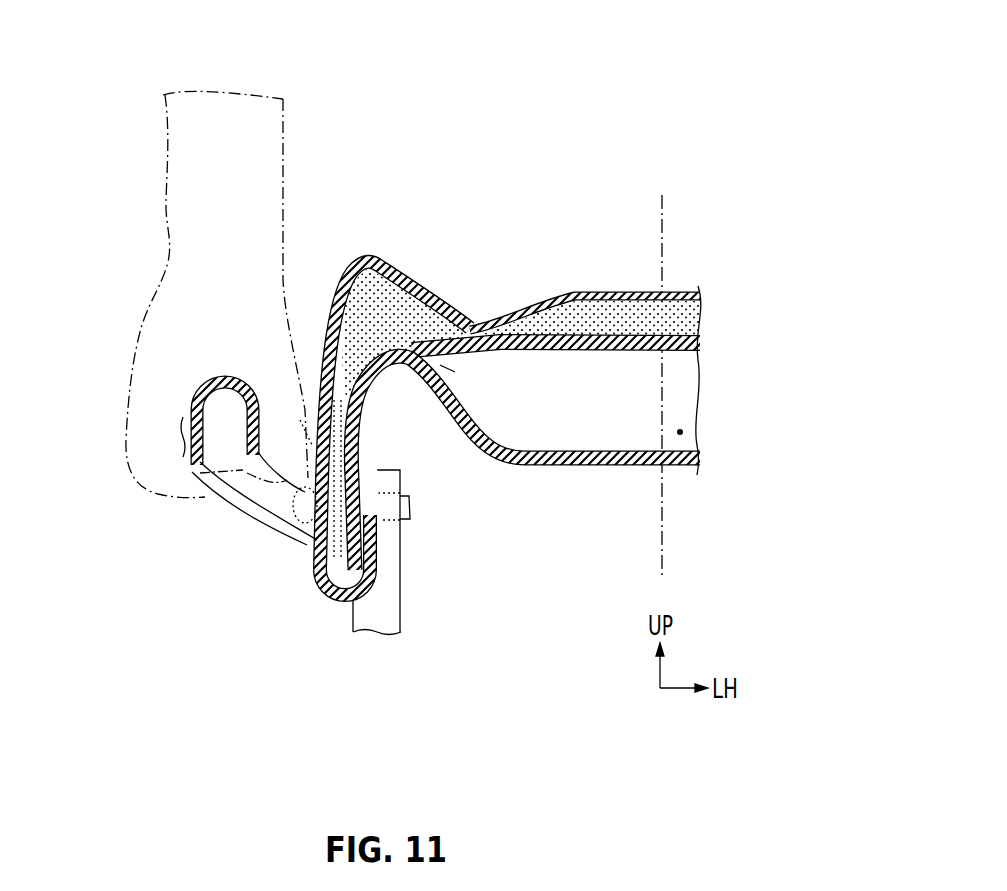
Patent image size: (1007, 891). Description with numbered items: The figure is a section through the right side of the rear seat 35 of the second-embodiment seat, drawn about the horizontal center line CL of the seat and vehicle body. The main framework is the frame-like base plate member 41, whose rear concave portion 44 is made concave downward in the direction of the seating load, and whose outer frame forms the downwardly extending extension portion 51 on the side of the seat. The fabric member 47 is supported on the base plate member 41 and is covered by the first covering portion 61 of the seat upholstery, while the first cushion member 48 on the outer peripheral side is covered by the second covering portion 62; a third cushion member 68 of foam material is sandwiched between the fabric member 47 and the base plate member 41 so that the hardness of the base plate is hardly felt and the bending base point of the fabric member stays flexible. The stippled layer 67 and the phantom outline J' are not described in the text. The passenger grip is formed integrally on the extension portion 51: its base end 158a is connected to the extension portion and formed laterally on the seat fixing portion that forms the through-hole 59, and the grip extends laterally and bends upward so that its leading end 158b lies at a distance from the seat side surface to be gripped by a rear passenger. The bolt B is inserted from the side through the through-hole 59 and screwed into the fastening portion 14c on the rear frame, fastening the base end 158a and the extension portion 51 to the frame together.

The rear seat 35 is at (509, 148).
The second covering portion 62 is at (375, 256).
The first cushion member 48 is at (400, 305).
The first covering portion 61 is at (642, 291).
The sponge layer 67 is at (700, 312).
The fabric member 47 is at (700, 350).
The third cushion member 68 is at (450, 368).
The rear concave portion 44 is at (680, 432).
The base plate member 41 is at (553, 466).
The extension portion 51 is at (333, 597).
The fastening portion 14c is at (388, 603).
The leading end 158b is at (207, 387).
The base end 158a is at (307, 415).
The through-hole 59 is at (300, 542).
The bolt B is at (300, 492).
The jamb (body) outline J' is at (197, 294).
The horizontal center line CL is at (667, 220).